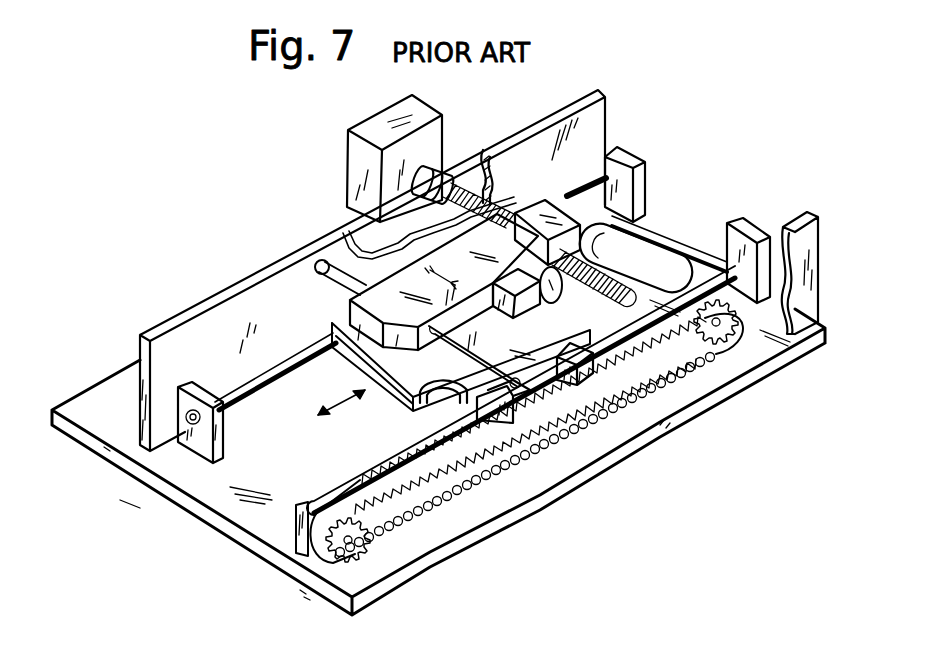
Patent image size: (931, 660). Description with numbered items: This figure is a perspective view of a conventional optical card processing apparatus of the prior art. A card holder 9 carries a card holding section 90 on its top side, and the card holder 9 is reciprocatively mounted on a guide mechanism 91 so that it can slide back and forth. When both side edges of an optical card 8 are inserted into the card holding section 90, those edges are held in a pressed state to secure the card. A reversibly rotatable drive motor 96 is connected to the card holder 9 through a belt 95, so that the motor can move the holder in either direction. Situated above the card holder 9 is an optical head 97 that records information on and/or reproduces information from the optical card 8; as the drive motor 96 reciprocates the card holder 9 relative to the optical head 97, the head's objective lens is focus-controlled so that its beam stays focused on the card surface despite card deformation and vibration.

The optical card 8 is at (383, 387).
The card holder 9 is at (372, 387).
The card holding section 90 is at (352, 373).
The guide mechanism 91 is at (254, 398).
The belt 95 is at (600, 420).
The drive motor 96 is at (655, 252).
The optical head 97 is at (378, 292).